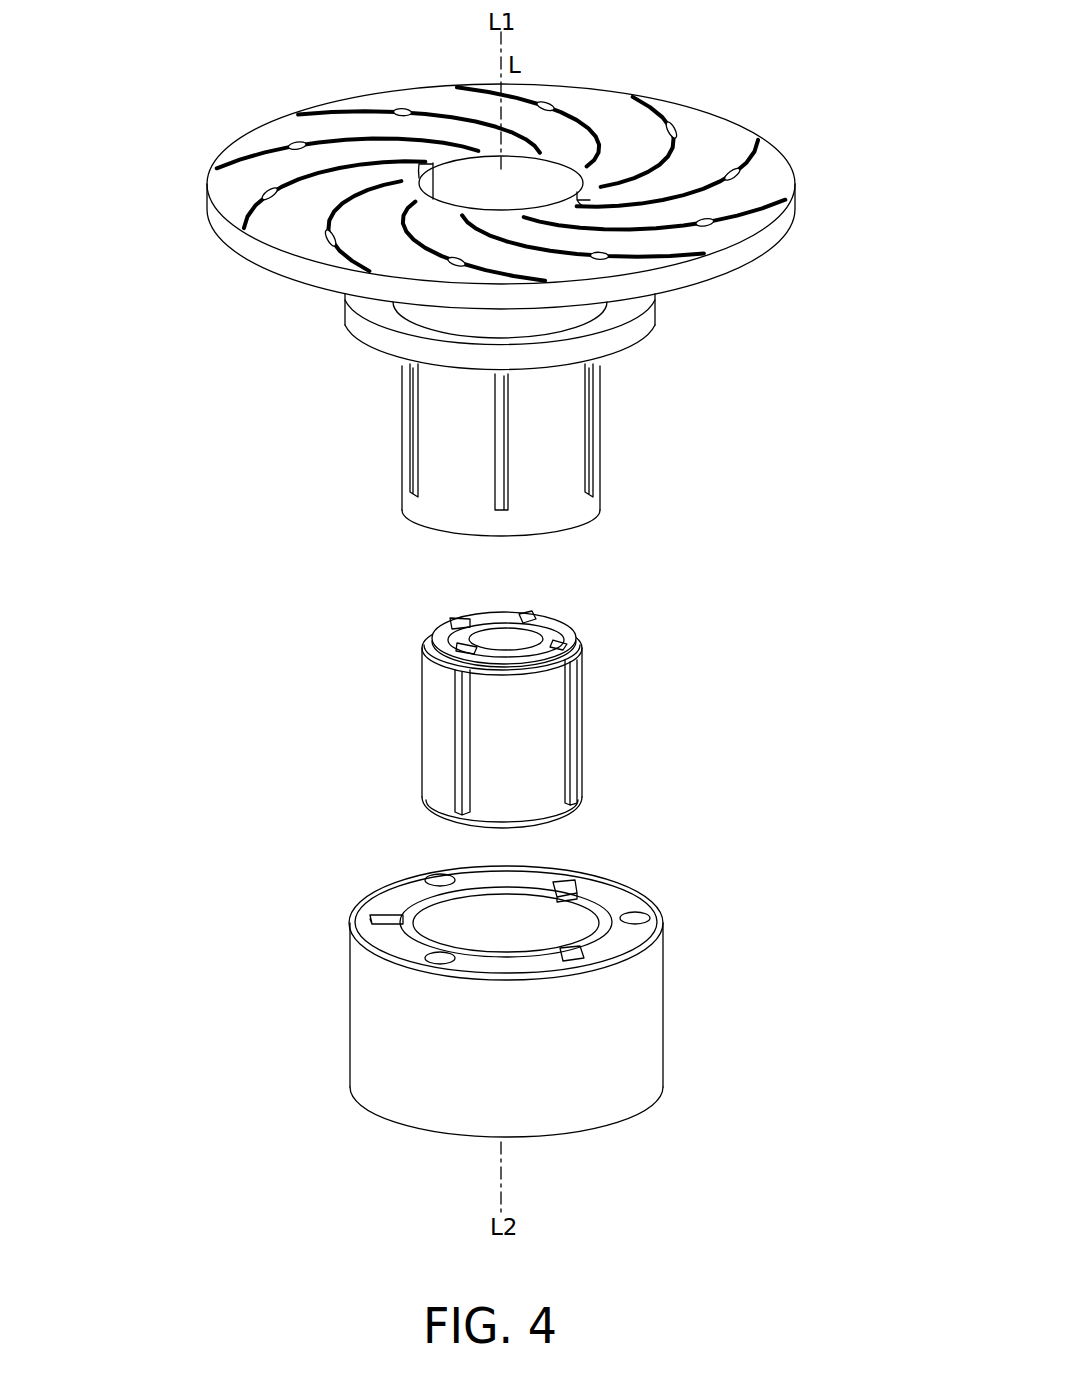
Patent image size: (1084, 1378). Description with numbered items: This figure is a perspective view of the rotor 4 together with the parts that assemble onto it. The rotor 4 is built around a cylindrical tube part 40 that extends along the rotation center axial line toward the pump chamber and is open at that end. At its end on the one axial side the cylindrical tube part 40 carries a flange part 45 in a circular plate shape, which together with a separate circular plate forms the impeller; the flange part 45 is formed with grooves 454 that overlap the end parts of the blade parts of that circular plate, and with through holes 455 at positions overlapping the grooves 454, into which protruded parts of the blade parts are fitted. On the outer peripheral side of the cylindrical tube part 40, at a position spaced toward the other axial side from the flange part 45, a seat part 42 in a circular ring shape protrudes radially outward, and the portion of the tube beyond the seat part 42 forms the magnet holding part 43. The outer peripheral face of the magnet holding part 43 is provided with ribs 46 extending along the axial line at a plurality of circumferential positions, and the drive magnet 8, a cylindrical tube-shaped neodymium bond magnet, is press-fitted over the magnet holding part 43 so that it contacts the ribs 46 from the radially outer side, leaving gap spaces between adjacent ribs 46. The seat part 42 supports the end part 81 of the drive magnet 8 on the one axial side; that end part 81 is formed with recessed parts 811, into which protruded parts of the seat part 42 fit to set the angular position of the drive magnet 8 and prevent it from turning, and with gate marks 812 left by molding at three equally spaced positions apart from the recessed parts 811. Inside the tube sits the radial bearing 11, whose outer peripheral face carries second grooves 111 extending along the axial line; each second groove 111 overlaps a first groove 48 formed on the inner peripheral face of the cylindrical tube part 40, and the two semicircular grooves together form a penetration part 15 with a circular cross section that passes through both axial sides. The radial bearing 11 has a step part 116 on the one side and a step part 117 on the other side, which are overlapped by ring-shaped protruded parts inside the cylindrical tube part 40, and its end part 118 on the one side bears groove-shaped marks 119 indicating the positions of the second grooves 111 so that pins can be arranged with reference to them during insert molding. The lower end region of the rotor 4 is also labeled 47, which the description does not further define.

The rotor 4 is at (504, 179).
The flange part 45 is at (287, 243).
The groove 454 is at (578, 195).
The hole 455 is at (680, 130).
The first groove 48 is at (420, 164).
The penetration part 15 is at (600, 198).
The seat part 42 is at (370, 339).
The cylindrical tube part 40 is at (600, 382).
The magnet holding part 43 is at (503, 458).
The rib 46 is at (492, 470).
The lower end portion 47 is at (595, 513).
The radial bearing 11 is at (521, 697).
The end part 118 is at (552, 618).
The step part 116 is at (572, 634).
The mark 119 is at (432, 640).
The second groove 111 is at (565, 750).
The step part 117 is at (570, 815).
The drive magnet 8 is at (515, 982).
The end part 81 is at (620, 895).
The recessed part 811 is at (560, 887).
The gate mark 812 is at (442, 878).